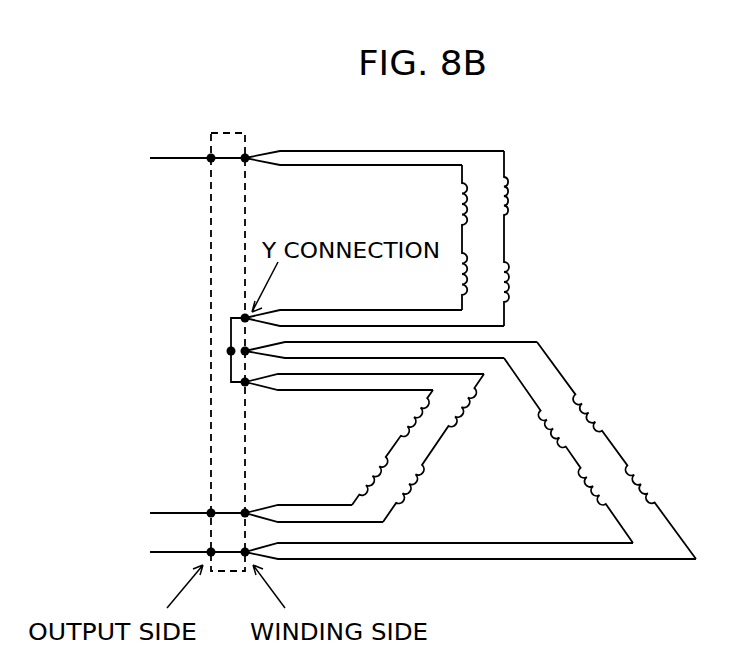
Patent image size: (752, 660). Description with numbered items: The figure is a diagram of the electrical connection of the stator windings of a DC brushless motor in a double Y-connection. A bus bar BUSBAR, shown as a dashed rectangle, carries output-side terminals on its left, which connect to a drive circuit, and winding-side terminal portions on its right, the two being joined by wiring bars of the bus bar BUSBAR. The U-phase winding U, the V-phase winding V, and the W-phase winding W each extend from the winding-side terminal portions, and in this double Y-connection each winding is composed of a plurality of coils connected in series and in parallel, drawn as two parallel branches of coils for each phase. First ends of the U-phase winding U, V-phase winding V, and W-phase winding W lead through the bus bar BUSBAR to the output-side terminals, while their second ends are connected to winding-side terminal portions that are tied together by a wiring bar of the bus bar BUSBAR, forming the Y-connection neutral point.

The bus bar BUSBAR is at (251, 336).
The U-phase winding U is at (396, 238).
The V-phase winding V is at (364, 448).
The W-phase winding W is at (470, 450).